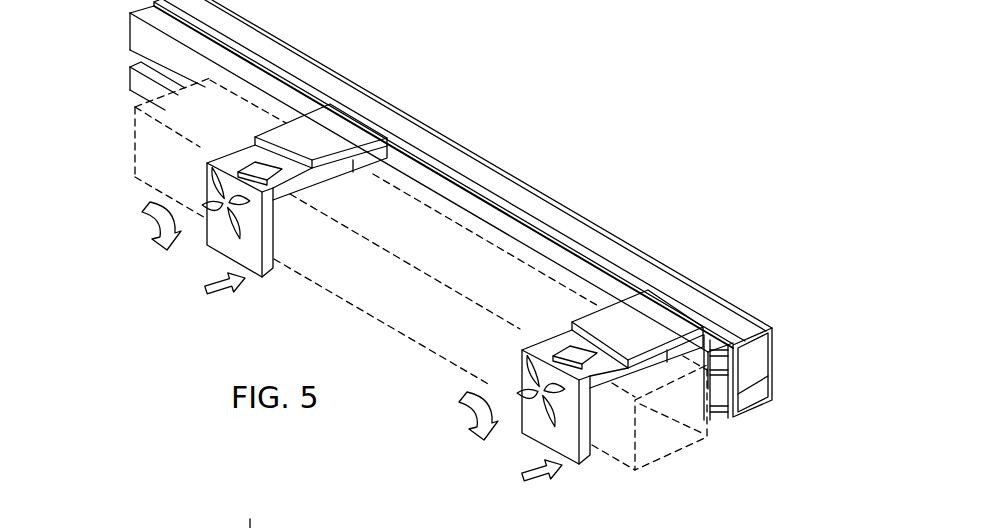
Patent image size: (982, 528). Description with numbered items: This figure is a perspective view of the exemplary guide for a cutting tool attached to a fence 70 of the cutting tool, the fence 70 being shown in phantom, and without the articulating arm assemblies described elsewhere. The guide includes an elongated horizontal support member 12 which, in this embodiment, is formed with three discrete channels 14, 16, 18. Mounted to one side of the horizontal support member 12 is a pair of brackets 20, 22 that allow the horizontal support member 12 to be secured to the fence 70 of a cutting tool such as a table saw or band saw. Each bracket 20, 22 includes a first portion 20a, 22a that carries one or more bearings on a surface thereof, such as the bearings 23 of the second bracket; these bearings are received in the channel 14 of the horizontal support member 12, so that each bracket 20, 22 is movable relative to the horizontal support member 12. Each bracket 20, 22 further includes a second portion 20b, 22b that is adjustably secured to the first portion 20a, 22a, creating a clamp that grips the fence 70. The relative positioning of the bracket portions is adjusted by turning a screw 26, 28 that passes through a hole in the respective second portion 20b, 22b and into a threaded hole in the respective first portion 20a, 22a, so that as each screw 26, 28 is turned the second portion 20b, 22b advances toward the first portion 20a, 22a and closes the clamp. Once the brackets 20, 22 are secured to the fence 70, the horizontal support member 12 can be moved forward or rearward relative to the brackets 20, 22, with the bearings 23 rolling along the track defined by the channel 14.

The horizontal support member 12 is at (757, 408).
The channel 14 is at (728, 418).
The channel 16 is at (720, 341).
The channel 18 is at (758, 353).
The bracket 20 is at (249, 195).
The first portion 20a is at (343, 130).
The second portion 20b is at (270, 262).
The bracket 22 is at (563, 386).
The first portion 22a is at (660, 318).
The second portion 22b is at (590, 452).
The bearings 23 is at (705, 372).
The screw 26 is at (220, 205).
The screw 28 is at (480, 345).
The fence 70 is at (436, 380).